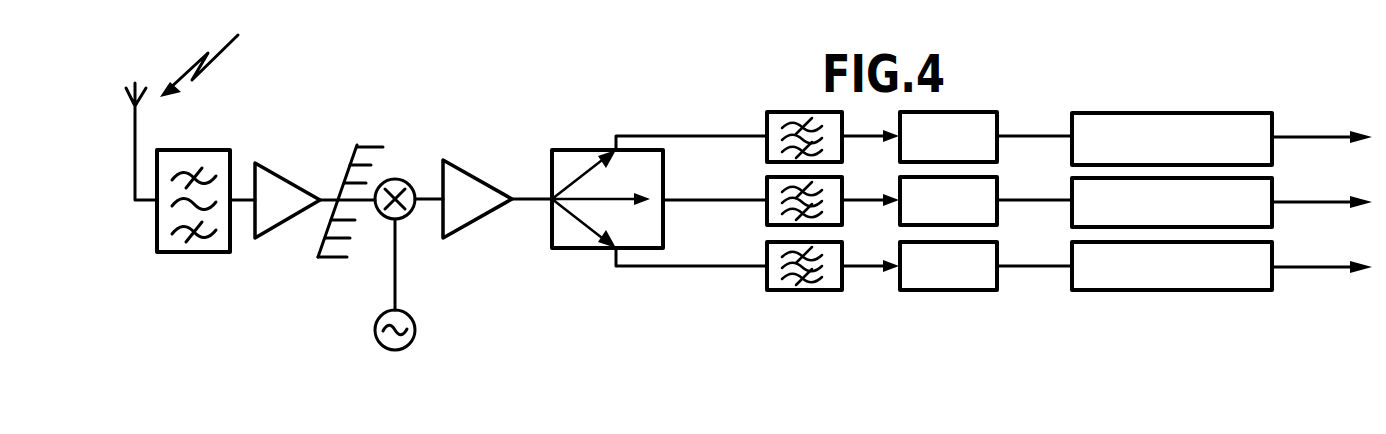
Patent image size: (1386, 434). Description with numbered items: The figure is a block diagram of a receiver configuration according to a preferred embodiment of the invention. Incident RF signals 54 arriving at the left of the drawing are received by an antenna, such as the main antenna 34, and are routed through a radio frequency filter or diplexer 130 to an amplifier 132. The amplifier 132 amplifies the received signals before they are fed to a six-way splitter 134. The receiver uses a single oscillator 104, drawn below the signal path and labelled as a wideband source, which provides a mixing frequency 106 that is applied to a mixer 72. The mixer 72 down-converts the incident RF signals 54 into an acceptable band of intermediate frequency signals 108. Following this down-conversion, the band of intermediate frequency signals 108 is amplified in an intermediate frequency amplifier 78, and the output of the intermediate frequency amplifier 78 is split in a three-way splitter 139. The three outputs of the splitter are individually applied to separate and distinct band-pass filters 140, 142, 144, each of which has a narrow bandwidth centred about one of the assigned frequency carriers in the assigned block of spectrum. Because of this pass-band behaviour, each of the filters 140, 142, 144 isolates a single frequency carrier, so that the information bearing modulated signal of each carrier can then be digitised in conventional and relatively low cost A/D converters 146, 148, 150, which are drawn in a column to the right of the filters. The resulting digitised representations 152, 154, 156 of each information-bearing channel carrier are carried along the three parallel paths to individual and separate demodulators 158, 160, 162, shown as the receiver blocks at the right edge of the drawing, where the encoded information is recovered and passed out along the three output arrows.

The main antenna 34 is at (143, 102).
The incident RF signals 54 is at (216, 68).
The radio frequency filter or diplexer 130 is at (226, 156).
The amplifier 132 is at (275, 210).
The six-way splitter 134 is at (366, 145).
The mixer 72 is at (398, 180).
The intermediate frequency amplifier 78 is at (482, 187).
The intermediate frequency signals 108 is at (430, 205).
The mixing frequency 106 is at (392, 290).
The oscillator 104 is at (414, 322).
The three-way splitter 139 is at (570, 252).
The band-pass filter 140 is at (766, 143).
The band-pass filter 142 is at (766, 209).
The band-pass filter 144 is at (766, 274).
The A/D converter 146 is at (988, 130).
The A/D converter 148 is at (988, 194).
The A/D converter 150 is at (972, 276).
The digitised representation 152 is at (1052, 134).
The digitised representation 154 is at (1067, 204).
The digitised representation 156 is at (1040, 267).
The demodulator 158 is at (1250, 133).
The demodulator 160 is at (1250, 192).
The demodulator 162 is at (1242, 272).